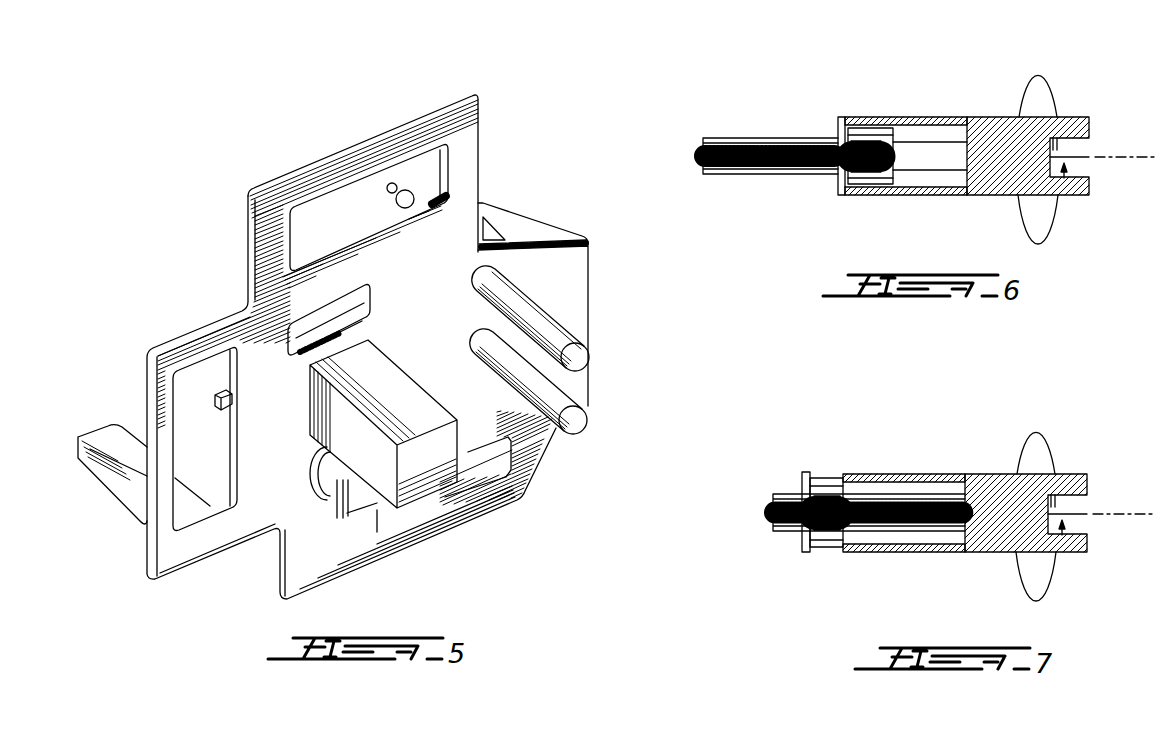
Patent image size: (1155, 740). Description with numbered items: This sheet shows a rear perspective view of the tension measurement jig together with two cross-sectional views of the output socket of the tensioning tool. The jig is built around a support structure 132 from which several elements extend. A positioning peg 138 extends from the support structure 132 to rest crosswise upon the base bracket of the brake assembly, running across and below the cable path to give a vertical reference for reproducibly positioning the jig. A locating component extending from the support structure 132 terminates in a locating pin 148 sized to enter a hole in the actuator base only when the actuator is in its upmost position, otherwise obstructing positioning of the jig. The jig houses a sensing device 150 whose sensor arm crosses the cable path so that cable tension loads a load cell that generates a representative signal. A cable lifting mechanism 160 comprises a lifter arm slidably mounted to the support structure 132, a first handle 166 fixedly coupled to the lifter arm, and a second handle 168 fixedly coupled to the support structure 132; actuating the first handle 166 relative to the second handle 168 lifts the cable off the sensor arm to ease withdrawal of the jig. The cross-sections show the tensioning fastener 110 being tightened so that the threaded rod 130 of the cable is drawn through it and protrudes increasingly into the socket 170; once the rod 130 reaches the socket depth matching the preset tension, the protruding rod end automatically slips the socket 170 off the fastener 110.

In FIG. 6, the tensioning fastener 110 is at (871, 130).
In FIG. 7, the tensioning fastener 110 is at (827, 483).
In FIG. 6, the threaded rod 130 is at (755, 137).
In FIG. 7, the threaded rod 130 is at (890, 506).
In FIG. 5, the support structure 132 is at (489, 514).
In FIG. 5, the positioning peg 138 is at (100, 438).
In FIG. 5, the locating pin 148 is at (390, 186).
In FIG. 5, the sensing device 150 is at (333, 493).
In FIG. 5, the cable lifting mechanism 160 is at (612, 380).
In FIG. 5, the first handle 166 is at (587, 425).
In FIG. 5, the second handle 168 is at (558, 323).
In FIG. 6, the socket 170 is at (996, 140).
In FIG. 7, the socket 170 is at (990, 497).